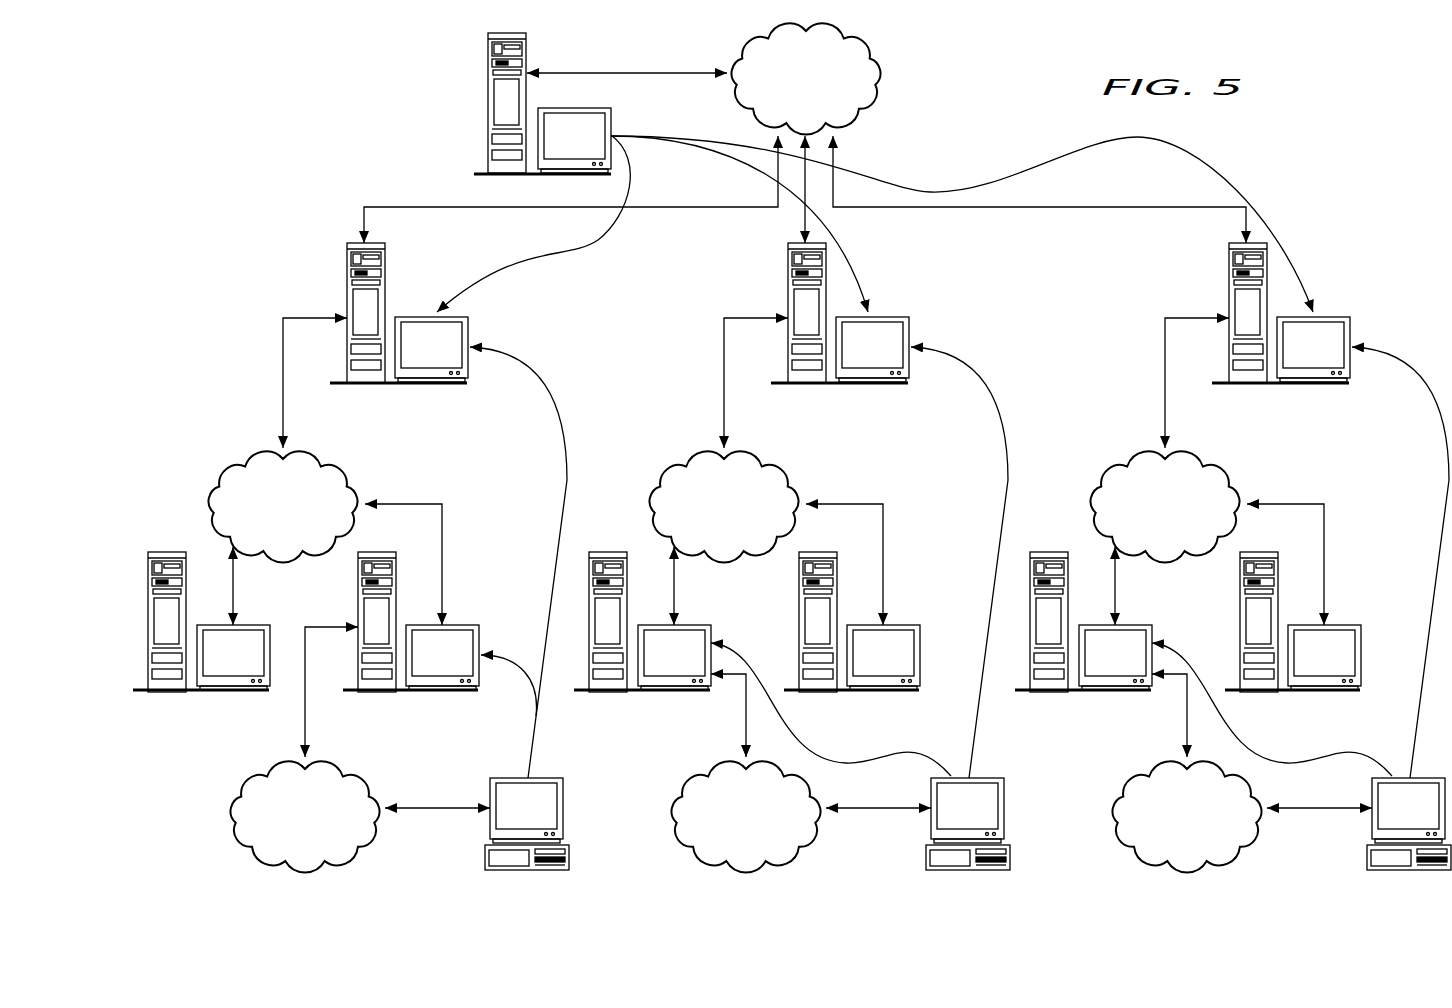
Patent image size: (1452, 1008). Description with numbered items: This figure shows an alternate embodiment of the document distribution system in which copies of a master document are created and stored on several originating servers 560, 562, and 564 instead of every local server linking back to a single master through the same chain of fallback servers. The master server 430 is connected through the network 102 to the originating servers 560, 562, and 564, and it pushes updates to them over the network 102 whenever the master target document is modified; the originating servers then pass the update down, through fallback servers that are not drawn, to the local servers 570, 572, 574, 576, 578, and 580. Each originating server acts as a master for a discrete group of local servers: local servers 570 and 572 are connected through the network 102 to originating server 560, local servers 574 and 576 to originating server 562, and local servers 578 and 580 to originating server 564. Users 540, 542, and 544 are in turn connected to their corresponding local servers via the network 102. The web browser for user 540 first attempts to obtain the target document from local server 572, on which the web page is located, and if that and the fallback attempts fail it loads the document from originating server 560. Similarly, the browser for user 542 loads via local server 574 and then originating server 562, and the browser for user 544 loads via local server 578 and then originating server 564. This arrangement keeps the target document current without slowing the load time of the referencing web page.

The network 102 is at (286, 846).
The master server 430 is at (464, 143).
The originating server 560 is at (416, 444).
The originating server 562 is at (832, 345).
The originating server 564 is at (1273, 345).
The local server 570 is at (222, 754).
The local server 572 is at (431, 754).
The local server 574 is at (660, 652).
The local server 576 is at (851, 629).
The local server 578 is at (1101, 652).
The local server 580 is at (1292, 629).
The user 540 is at (547, 926).
The user 542 is at (860, 637).
The user 544 is at (1301, 637).